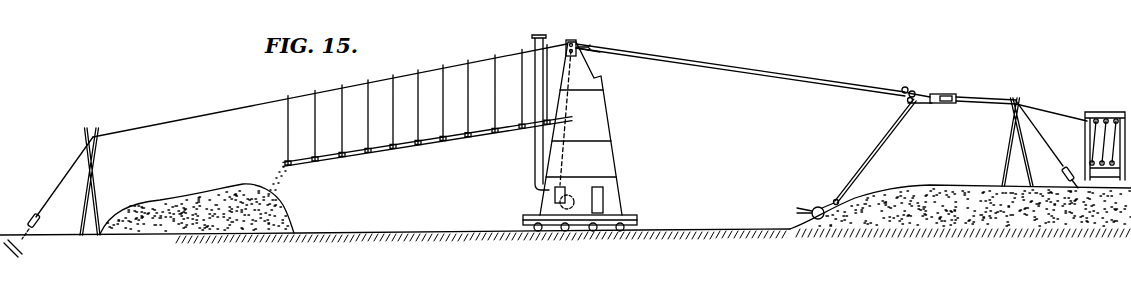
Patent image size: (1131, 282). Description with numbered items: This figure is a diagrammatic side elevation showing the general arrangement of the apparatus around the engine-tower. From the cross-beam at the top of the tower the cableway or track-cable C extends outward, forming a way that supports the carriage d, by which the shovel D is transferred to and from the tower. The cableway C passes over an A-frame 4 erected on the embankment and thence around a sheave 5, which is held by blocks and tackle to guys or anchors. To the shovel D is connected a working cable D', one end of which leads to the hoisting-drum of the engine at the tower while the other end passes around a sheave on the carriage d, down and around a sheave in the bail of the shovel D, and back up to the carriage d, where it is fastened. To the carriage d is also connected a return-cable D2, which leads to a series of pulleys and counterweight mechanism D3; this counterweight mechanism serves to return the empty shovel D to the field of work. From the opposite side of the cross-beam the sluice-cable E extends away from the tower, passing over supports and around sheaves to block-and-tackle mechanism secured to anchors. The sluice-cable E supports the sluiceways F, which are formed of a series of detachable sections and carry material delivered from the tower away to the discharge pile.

The sluice-cable E is at (268, 103).
The sluiceways F is at (414, 137).
The cableway C is at (742, 68).
The working cable D' is at (631, 73).
The carriage d is at (932, 90).
The A-frame 4 is at (1003, 155).
The sheave 5 is at (1071, 167).
The return-cable D2 is at (963, 107).
The shovel D is at (797, 213).
The counterweight mechanism D3 is at (1103, 170).